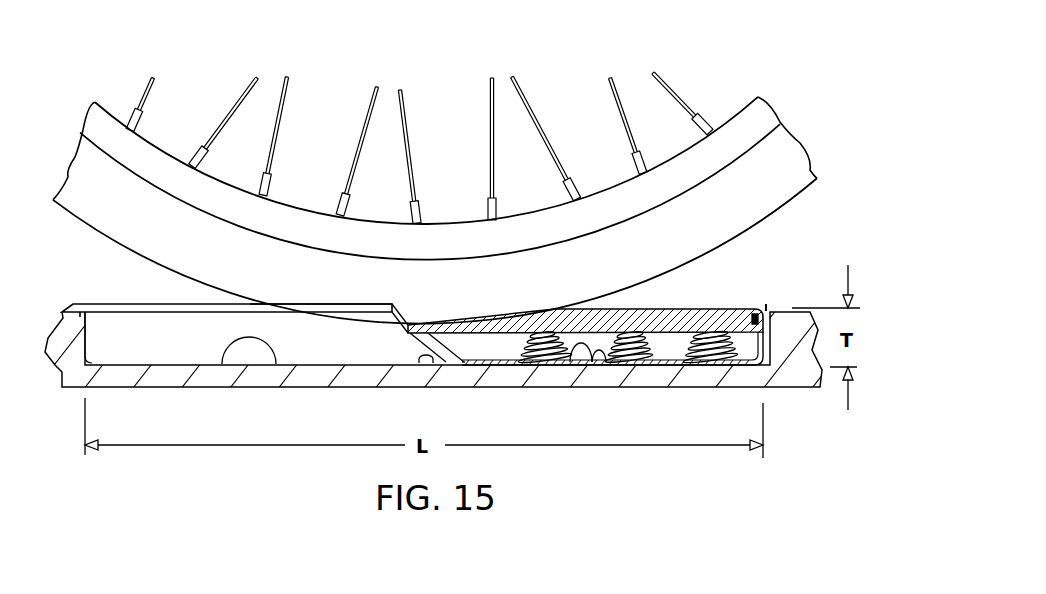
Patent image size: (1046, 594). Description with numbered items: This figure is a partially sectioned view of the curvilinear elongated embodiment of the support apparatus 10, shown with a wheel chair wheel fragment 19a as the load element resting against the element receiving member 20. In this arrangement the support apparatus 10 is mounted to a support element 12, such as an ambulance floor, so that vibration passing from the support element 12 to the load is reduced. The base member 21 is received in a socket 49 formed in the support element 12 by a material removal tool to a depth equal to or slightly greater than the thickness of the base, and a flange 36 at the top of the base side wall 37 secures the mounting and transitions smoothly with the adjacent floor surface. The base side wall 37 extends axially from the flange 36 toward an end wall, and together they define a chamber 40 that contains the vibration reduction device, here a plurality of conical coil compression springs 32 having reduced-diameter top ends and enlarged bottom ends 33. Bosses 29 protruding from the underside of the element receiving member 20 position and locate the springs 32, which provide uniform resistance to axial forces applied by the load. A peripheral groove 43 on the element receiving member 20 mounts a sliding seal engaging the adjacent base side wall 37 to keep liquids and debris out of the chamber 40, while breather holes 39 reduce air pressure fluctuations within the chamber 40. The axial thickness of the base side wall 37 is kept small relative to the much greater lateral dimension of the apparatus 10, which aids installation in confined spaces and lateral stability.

The support apparatus 10 is at (755, 275).
The support element 12 is at (492, 395).
The wheel chair wheel fragment 19a is at (118, 250).
The element receiving member 20 is at (433, 303).
The base member 21 is at (312, 292).
The bosses 29 is at (710, 333).
The conical coil compression springs 32 is at (595, 365).
The bottom ends 33 is at (632, 365).
The flange 36 is at (180, 304).
The base side wall 37 is at (477, 345).
The breather holes 39 is at (418, 356).
The chamber 40 is at (672, 347).
The peripheral groove 43 is at (758, 322).
The socket 49 is at (278, 364).